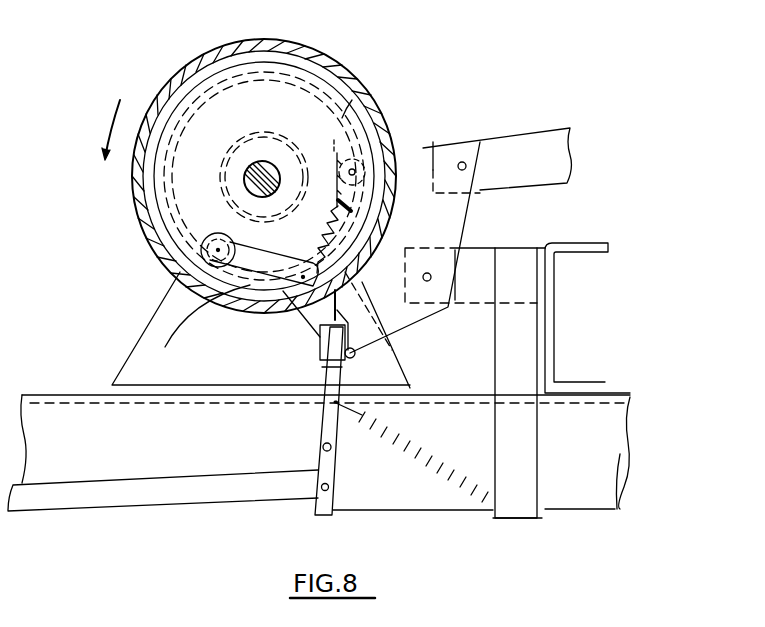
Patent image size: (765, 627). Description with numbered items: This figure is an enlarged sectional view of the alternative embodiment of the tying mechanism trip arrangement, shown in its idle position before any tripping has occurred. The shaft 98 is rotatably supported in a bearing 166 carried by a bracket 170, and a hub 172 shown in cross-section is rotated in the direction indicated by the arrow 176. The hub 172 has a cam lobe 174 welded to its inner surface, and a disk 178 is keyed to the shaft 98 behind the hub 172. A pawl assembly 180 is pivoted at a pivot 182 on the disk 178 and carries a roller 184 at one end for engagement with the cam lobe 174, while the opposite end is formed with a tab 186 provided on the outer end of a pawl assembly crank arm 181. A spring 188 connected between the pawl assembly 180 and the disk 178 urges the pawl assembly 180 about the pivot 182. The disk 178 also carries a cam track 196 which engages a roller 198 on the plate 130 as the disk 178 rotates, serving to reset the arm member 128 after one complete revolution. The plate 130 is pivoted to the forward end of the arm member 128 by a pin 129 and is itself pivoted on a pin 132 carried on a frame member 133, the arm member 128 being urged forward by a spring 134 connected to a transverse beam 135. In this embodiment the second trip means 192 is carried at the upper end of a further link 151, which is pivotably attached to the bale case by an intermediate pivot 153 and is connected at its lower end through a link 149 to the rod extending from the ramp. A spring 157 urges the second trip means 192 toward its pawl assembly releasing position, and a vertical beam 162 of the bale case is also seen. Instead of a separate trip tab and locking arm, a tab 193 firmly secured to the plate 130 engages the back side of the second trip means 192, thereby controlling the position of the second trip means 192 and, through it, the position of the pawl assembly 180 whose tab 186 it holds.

The shaft 98 is at (280, 163).
The arm member 128 is at (535, 140).
The pin 129 is at (466, 166).
The plate 130 is at (423, 147).
The pin 132 is at (431, 277).
The frame member 133 is at (477, 295).
The spring 134 is at (604, 262).
The transverse beam 135 is at (555, 327).
The link 149 is at (210, 493).
The further link 151 is at (322, 427).
The intermediate pivot 153 is at (322, 447).
The spring 157 is at (407, 447).
The vertical beam 162 is at (510, 375).
The bearing 166 is at (277, 127).
The bracket 170 is at (157, 318).
The hub 172 is at (296, 39).
The cam lobe 174 is at (162, 138).
The arrow 176 is at (107, 133).
The disk 178 is at (213, 82).
The pawl assembly 180 is at (196, 331).
The pawl assembly crank arm 181 is at (300, 310).
The pivot 182 is at (335, 265).
The roller 184 is at (212, 233).
The tab 186 is at (320, 345).
The spring 188 is at (333, 222).
The second trip means 192 is at (320, 363).
The tab 193 is at (355, 353).
The cam track 196 is at (352, 100).
The roller 198 is at (337, 165).